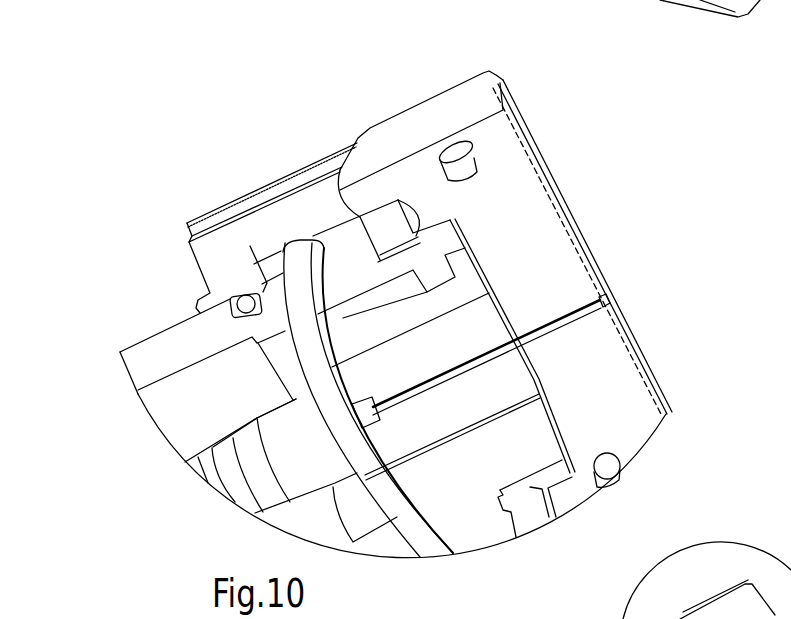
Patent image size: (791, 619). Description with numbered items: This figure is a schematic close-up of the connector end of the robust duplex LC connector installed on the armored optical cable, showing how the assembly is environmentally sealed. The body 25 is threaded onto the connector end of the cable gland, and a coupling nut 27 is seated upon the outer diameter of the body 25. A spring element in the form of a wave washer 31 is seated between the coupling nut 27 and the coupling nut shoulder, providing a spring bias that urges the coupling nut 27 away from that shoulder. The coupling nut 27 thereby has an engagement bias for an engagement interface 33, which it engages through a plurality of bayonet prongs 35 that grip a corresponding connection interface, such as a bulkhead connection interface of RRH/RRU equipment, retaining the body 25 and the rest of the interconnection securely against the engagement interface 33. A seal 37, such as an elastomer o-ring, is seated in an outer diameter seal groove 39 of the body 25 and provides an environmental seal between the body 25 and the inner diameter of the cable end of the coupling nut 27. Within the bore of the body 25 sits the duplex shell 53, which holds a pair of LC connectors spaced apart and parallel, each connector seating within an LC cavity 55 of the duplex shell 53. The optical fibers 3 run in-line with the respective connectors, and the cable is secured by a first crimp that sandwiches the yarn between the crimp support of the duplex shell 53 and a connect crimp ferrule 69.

The optical fibers 3 is at (560, 319).
The body 25 is at (188, 343).
The coupling nut 27 is at (457, 108).
The wave washer 31 is at (415, 525).
The engagement interface 33 is at (601, 292).
The bayonet prongs 35 is at (457, 152).
The seal 37 is at (150, 249).
The outer diameter seal groove 39 is at (247, 302).
The duplex shell 53 is at (535, 437).
The LC cavity 55 is at (447, 343).
The connect crimp ferrule 69 is at (298, 447).